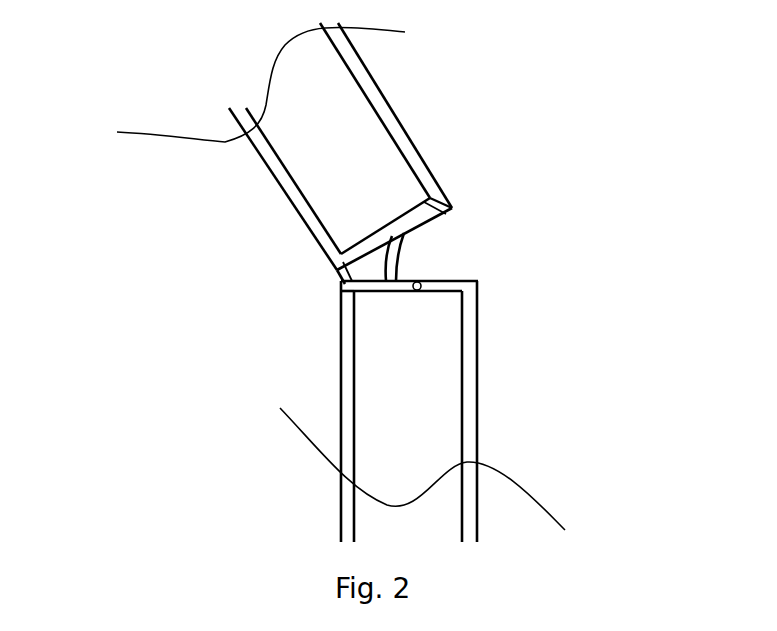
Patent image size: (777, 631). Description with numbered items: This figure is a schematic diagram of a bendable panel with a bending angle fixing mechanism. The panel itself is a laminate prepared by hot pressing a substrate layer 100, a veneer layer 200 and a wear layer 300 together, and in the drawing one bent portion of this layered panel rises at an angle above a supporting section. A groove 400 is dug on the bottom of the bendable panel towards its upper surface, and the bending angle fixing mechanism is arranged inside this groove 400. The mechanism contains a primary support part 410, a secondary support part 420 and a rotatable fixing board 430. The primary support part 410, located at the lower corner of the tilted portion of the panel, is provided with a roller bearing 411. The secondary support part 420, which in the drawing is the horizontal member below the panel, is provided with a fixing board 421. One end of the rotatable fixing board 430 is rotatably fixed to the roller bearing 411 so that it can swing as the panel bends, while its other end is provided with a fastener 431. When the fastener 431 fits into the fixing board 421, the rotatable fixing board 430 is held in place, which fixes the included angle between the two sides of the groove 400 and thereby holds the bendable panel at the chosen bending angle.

The substrate layer 100 is at (318, 170).
The veneer layer 200 is at (426, 177).
The wear layer 300 is at (295, 212).
The groove 400 is at (443, 252).
The primary support part 410 is at (450, 212).
The roller bearing 411 is at (430, 197).
The secondary support part 420 is at (482, 283).
The fixing board 421 is at (408, 293).
The rotatable fixing board 430 is at (328, 259).
The fastener 431 is at (345, 293).